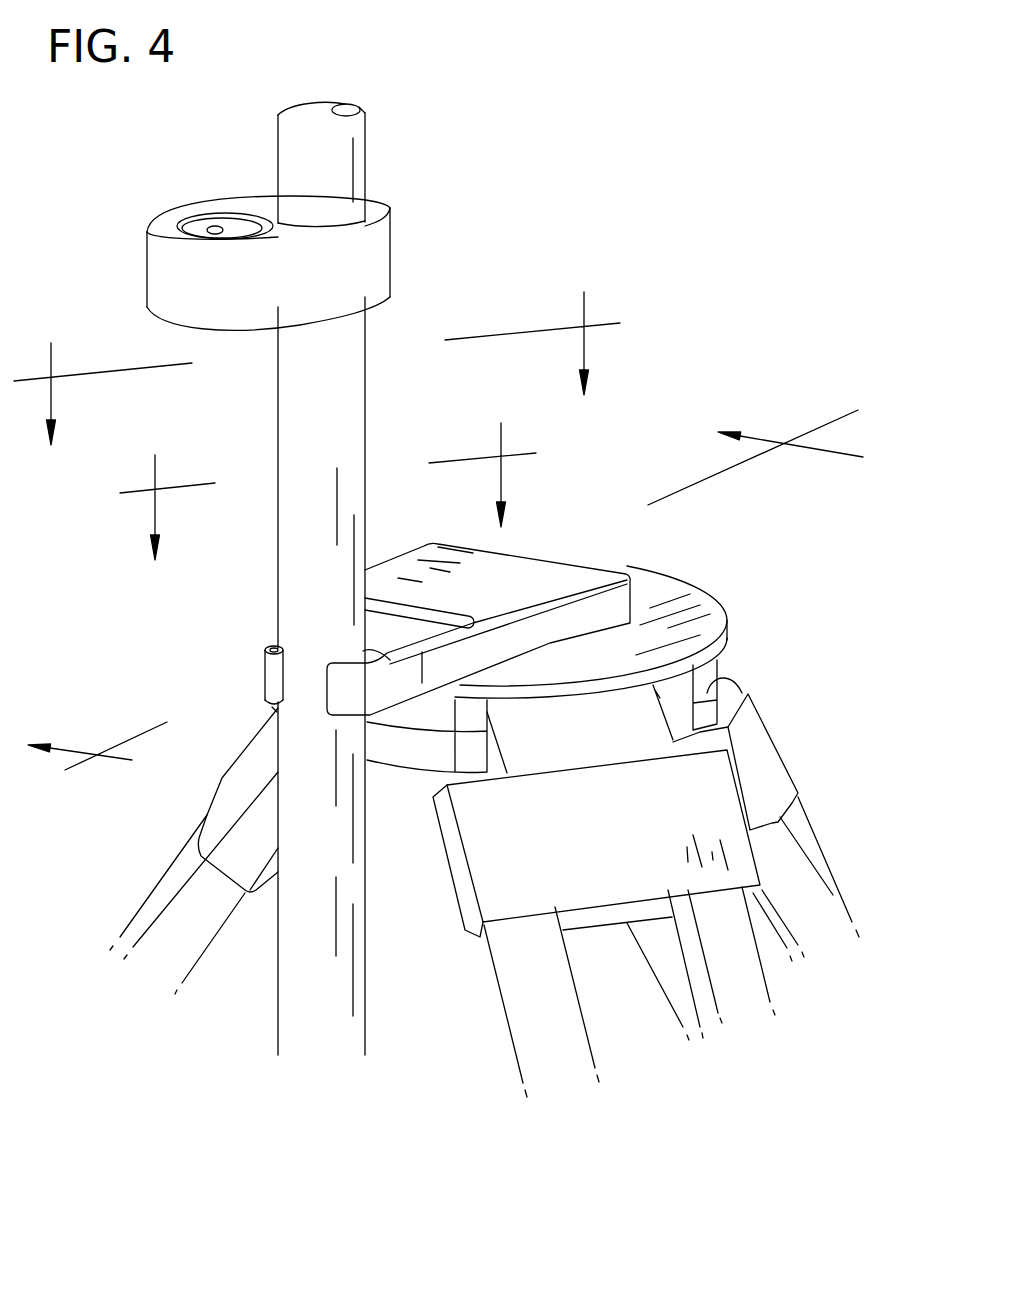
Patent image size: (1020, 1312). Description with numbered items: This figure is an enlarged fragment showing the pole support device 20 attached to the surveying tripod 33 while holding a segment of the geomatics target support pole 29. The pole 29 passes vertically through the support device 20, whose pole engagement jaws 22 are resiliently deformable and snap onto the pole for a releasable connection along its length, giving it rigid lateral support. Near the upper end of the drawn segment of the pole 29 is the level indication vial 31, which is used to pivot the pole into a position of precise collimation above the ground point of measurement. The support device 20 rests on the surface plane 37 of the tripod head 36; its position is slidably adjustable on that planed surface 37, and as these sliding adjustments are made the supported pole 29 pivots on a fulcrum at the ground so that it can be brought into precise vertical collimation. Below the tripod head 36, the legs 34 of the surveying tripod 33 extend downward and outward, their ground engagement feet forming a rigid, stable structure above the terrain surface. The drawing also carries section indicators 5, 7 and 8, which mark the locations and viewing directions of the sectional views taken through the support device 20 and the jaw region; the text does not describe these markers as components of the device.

The section line 5- 5 is at (317, 367).
The section line 7- 7 is at (328, 490).
The section line 8- 8 is at (445, 600).
The pole support device 20 is at (571, 547).
The pole engagement jaws 22 is at (342, 690).
The geomatics target support pole 29 is at (372, 163).
The level indication vial 31 is at (198, 225).
The surveying tripod 33 is at (807, 797).
The legs 34 is at (826, 887).
The tripod head 36 is at (710, 673).
The surface plane 37 is at (655, 592).